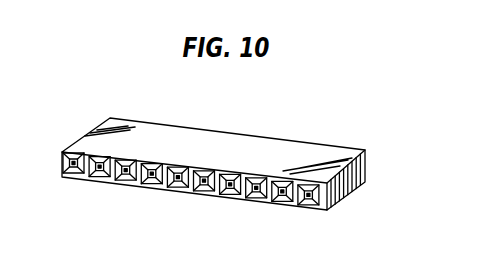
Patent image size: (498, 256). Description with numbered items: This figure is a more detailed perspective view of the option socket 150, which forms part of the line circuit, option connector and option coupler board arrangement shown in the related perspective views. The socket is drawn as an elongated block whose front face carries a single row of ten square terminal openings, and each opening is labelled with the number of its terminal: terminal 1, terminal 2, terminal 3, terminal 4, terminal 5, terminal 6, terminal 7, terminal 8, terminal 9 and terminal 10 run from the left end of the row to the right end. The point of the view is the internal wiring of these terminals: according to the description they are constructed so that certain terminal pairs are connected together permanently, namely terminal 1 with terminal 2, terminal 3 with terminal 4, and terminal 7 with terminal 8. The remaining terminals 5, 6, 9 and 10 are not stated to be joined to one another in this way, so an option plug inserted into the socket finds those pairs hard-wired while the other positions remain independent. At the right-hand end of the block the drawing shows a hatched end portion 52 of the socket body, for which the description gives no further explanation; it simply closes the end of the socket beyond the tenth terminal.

The connector housing 150 is at (215, 140).
The end wall 52 is at (357, 173).
The terminal 1 is at (73, 176).
The terminal 2 is at (99, 180).
The terminal 3 is at (125, 183).
The terminal 4 is at (151, 187).
The terminal 5 is at (177, 190).
The terminal 6 is at (204, 194).
The terminal 7 is at (230, 197).
The terminal 8 is at (256, 200).
The terminal 9 is at (282, 203).
The terminal 10 is at (309, 207).